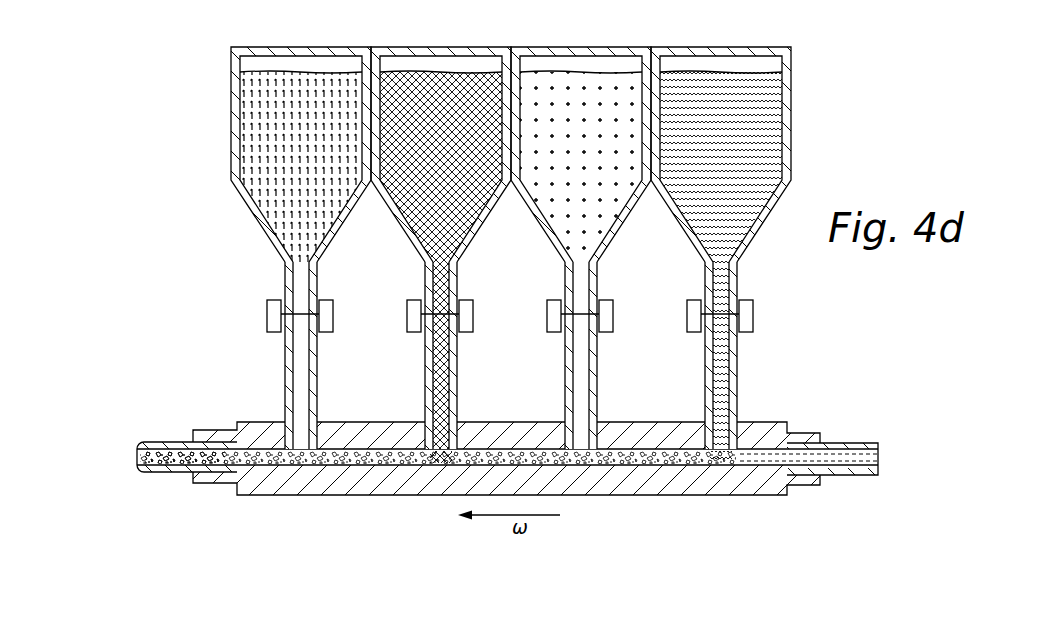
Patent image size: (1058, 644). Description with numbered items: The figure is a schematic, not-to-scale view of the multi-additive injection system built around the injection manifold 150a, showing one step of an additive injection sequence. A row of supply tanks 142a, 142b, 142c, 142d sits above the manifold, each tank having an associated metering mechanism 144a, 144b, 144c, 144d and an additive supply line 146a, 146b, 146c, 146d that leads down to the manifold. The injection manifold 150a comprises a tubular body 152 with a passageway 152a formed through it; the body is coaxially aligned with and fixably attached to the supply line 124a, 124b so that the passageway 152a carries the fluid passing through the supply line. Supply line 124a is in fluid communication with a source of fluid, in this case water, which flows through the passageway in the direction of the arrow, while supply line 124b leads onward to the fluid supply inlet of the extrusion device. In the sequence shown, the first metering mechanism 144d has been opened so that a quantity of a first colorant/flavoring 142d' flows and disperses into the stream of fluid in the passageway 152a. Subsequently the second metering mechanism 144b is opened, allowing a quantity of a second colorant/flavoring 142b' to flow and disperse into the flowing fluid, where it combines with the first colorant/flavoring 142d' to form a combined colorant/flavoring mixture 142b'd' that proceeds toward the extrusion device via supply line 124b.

The supply tank 142a is at (278, 113).
The supply tank 142b is at (441, 154).
The supply tank 142c is at (558, 113).
The supply tank 142d is at (721, 154).
The metering mechanism 144a is at (334, 318).
The second metering mechanism 144b is at (474, 318).
The metering mechanism 144c is at (614, 318).
The first metering mechanism 144d is at (754, 318).
The additive supply line 146a is at (349, 387).
The additive supply line 146b is at (489, 387).
The additive supply line 146c is at (629, 387).
The additive supply line 146d is at (769, 387).
The supply line 124a is at (848, 443).
The supply line 124b is at (175, 443).
The combined colorant/flavoring mixture 142b'd' is at (137, 500).
The tubular body 152 is at (266, 492).
The passageway 152a is at (350, 468).
The second colorant/flavoring 142b' is at (385, 493).
The first colorant/flavoring 142d' is at (667, 491).
The injection manifold 150a is at (805, 499).